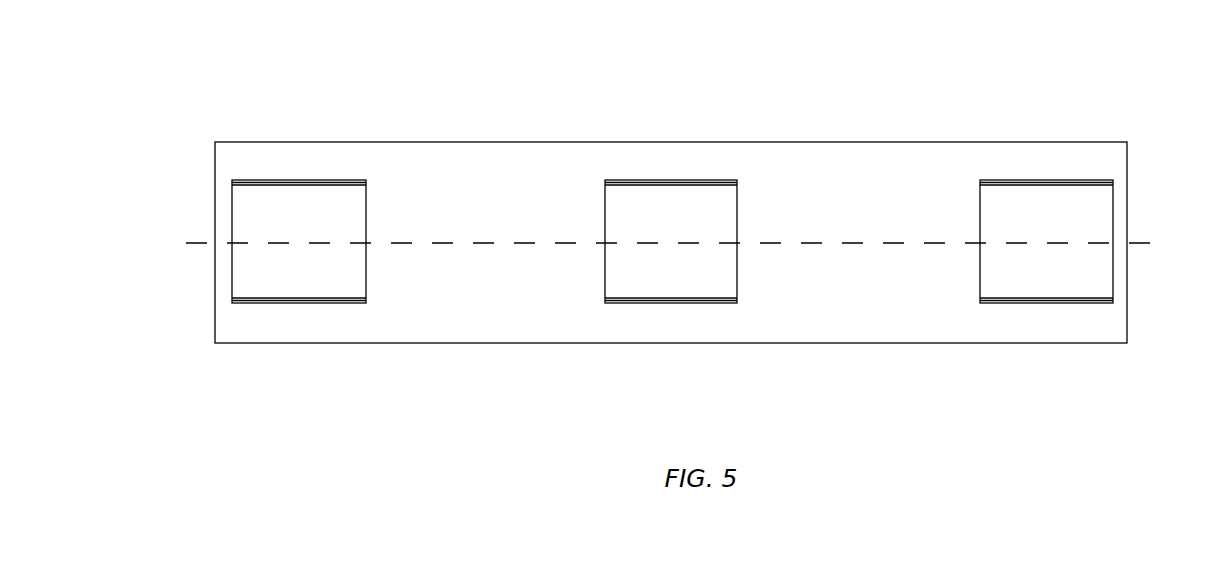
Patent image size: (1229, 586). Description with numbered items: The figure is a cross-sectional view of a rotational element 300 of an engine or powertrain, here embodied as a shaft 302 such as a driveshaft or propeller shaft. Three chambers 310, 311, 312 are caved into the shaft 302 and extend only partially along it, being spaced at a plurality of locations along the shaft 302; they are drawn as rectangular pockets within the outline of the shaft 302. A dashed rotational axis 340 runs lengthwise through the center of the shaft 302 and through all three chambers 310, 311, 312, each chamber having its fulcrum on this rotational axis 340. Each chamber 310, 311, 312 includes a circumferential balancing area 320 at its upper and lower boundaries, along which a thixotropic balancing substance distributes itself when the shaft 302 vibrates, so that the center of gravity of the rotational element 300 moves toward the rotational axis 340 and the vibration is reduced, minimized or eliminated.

The rotational element 300 is at (657, 38).
The shaft 302 is at (425, 142).
The chamber 310 is at (285, 236).
The chamber 311 is at (657, 236).
The chamber 312 is at (1029, 236).
The circumferential balancing area 320 is at (300, 180).
The rotational axis 340 is at (677, 257).